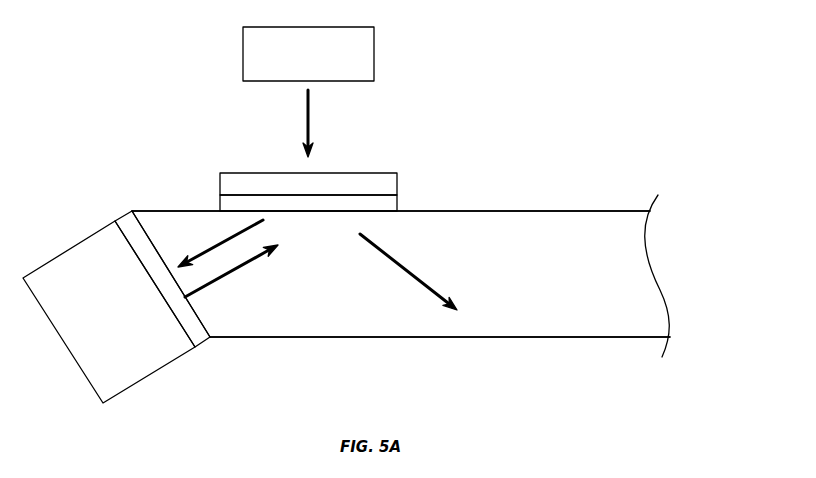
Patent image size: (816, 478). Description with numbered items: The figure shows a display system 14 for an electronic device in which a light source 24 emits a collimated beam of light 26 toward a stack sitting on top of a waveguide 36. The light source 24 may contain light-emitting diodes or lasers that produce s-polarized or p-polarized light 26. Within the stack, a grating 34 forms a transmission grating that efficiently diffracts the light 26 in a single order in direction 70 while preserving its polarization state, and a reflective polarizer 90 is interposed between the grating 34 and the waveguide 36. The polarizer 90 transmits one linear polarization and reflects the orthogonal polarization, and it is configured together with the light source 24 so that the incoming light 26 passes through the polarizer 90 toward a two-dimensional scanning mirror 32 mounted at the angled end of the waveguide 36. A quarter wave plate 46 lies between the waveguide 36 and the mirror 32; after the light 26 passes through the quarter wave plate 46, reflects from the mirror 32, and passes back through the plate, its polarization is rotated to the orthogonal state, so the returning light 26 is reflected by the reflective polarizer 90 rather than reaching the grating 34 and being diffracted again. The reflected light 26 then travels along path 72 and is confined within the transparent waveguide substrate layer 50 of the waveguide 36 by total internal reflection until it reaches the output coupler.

The display system 14 is at (566, 122).
The light source 24 is at (374, 50).
The light 26 is at (305, 125).
The two-dimensional scanning mirror 32 is at (150, 377).
The grating 34 is at (397, 180).
The waveguide 36 is at (705, 205).
The quarter wave plate 46 is at (127, 225).
The waveguide substrate layer 50 is at (598, 325).
The direction 70 is at (203, 249).
The S-polarized light path 72 is at (220, 283).
The reflective polarizer 90 is at (397, 203).